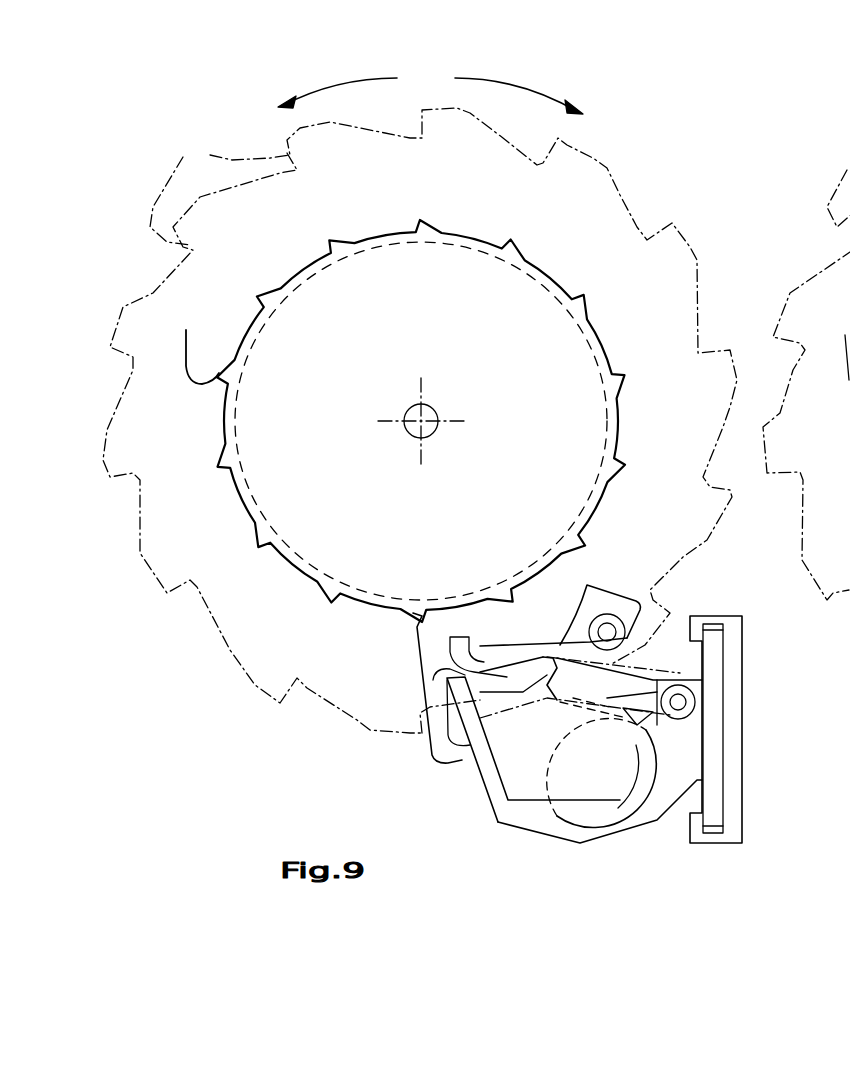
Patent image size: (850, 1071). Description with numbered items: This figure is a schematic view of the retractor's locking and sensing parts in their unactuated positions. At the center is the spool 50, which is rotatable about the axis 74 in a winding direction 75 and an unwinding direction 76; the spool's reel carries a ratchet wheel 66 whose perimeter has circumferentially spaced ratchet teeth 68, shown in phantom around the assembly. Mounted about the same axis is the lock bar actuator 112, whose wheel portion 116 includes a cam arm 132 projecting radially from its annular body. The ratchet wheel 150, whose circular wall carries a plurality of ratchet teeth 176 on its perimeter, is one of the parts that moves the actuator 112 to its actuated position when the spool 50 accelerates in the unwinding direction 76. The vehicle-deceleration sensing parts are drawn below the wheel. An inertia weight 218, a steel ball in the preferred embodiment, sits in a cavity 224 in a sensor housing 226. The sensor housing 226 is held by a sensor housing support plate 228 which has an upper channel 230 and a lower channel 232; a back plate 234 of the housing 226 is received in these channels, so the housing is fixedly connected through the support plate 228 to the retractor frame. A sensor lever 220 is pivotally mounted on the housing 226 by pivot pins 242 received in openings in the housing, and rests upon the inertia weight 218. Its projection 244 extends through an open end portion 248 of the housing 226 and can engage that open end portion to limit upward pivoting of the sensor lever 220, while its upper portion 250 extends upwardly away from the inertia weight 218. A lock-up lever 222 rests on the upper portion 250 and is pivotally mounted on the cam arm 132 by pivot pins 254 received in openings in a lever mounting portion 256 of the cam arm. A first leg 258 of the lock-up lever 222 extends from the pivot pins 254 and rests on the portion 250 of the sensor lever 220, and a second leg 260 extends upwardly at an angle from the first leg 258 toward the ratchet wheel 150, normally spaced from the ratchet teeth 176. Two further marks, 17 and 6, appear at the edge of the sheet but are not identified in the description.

The ratchet wheel 150 is at (489, 234).
The wheel portion 116 is at (400, 243).
The lock bar actuator 112 is at (386, 246).
The axis 74 is at (410, 440).
The unwinding direction 76 is at (338, 87).
The winding direction 75 is at (560, 83).
The ratchet teeth 68 is at (420, 420).
The ratchet wheel 66 is at (655, 280).
The spool 50 is at (637, 230).
The frame 17 is at (840, 345).
The housing part 6 is at (845, 144).
The ratchet teeth 176 is at (247, 297).
The sensor housing 226 is at (527, 830).
The projection 244 is at (470, 762).
The open end portion 248 is at (440, 672).
The cam arm 132 is at (417, 670).
The second leg 260 is at (440, 617).
The upper portion 250 is at (478, 620).
The first leg 258 is at (547, 617).
The pivot pins 254 is at (607, 613).
The lock-up lever 222 is at (532, 632).
The sensor lever 220 is at (648, 671).
The lever mounting portion 256 is at (660, 625).
The pivot pins 242 is at (680, 712).
The inertia weight 218 is at (612, 790).
The cavity 224 is at (582, 832).
The sensor housing support plate 228 is at (735, 722).
The upper channel 230 is at (720, 645).
The back plate 234 is at (715, 800).
The lower channel 232 is at (717, 838).